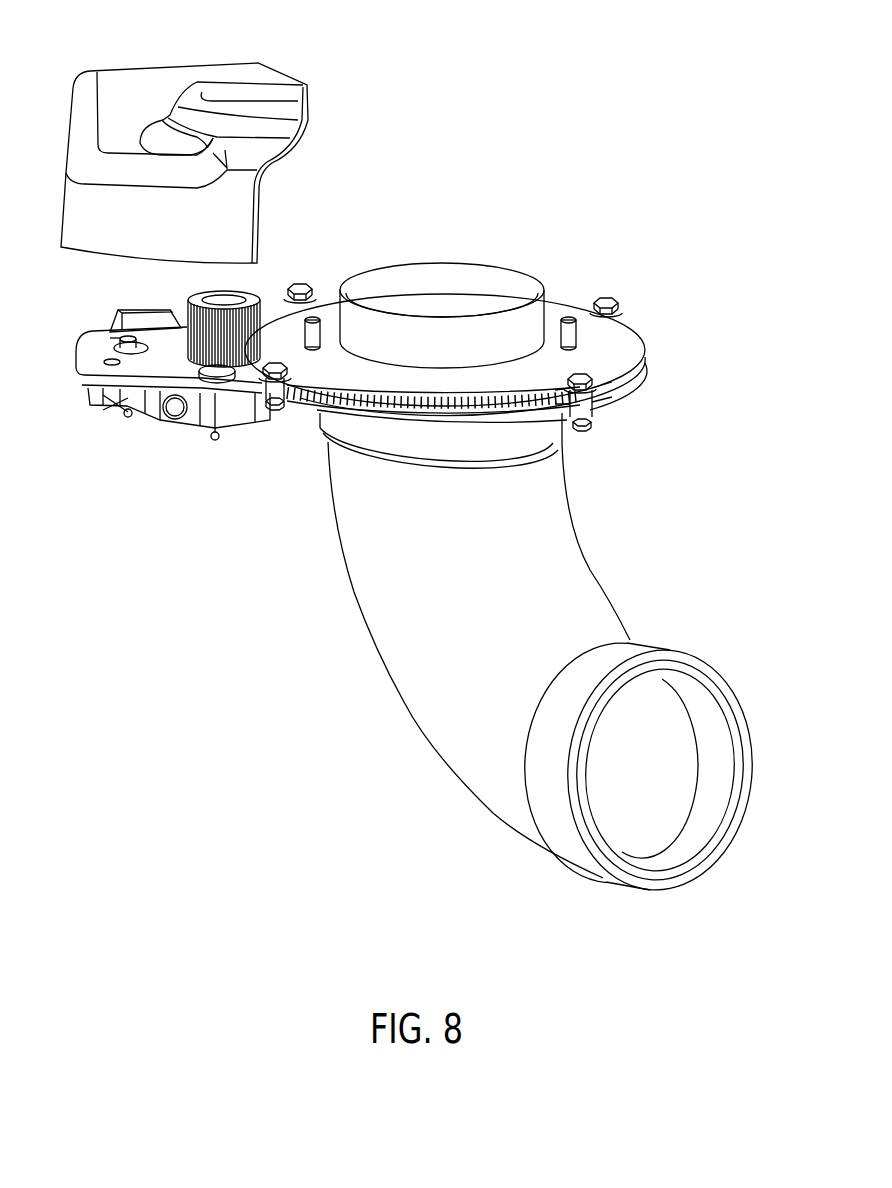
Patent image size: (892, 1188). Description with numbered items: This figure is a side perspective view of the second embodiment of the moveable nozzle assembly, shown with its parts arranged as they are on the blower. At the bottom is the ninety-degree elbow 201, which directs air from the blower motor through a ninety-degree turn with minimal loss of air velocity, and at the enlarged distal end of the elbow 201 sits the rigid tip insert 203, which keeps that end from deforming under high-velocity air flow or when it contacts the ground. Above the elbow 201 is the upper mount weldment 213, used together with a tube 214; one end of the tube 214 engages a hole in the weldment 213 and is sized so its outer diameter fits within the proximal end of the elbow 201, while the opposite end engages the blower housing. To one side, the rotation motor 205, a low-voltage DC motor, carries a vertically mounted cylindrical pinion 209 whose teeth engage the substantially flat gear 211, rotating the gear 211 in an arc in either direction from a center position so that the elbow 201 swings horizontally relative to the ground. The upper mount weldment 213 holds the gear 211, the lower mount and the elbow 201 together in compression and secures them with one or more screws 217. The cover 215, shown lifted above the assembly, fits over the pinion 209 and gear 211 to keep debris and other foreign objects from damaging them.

The 90-degree elbow 201 is at (567, 580).
The rigid tip insert 203 is at (715, 747).
The rotation motor 205 is at (133, 394).
The pinion 209 is at (247, 295).
The gear 211 is at (548, 445).
The upper mount weldment 213 is at (625, 347).
The tube 214 is at (495, 283).
The cover 215 is at (148, 82).
The screws 217 is at (612, 299).